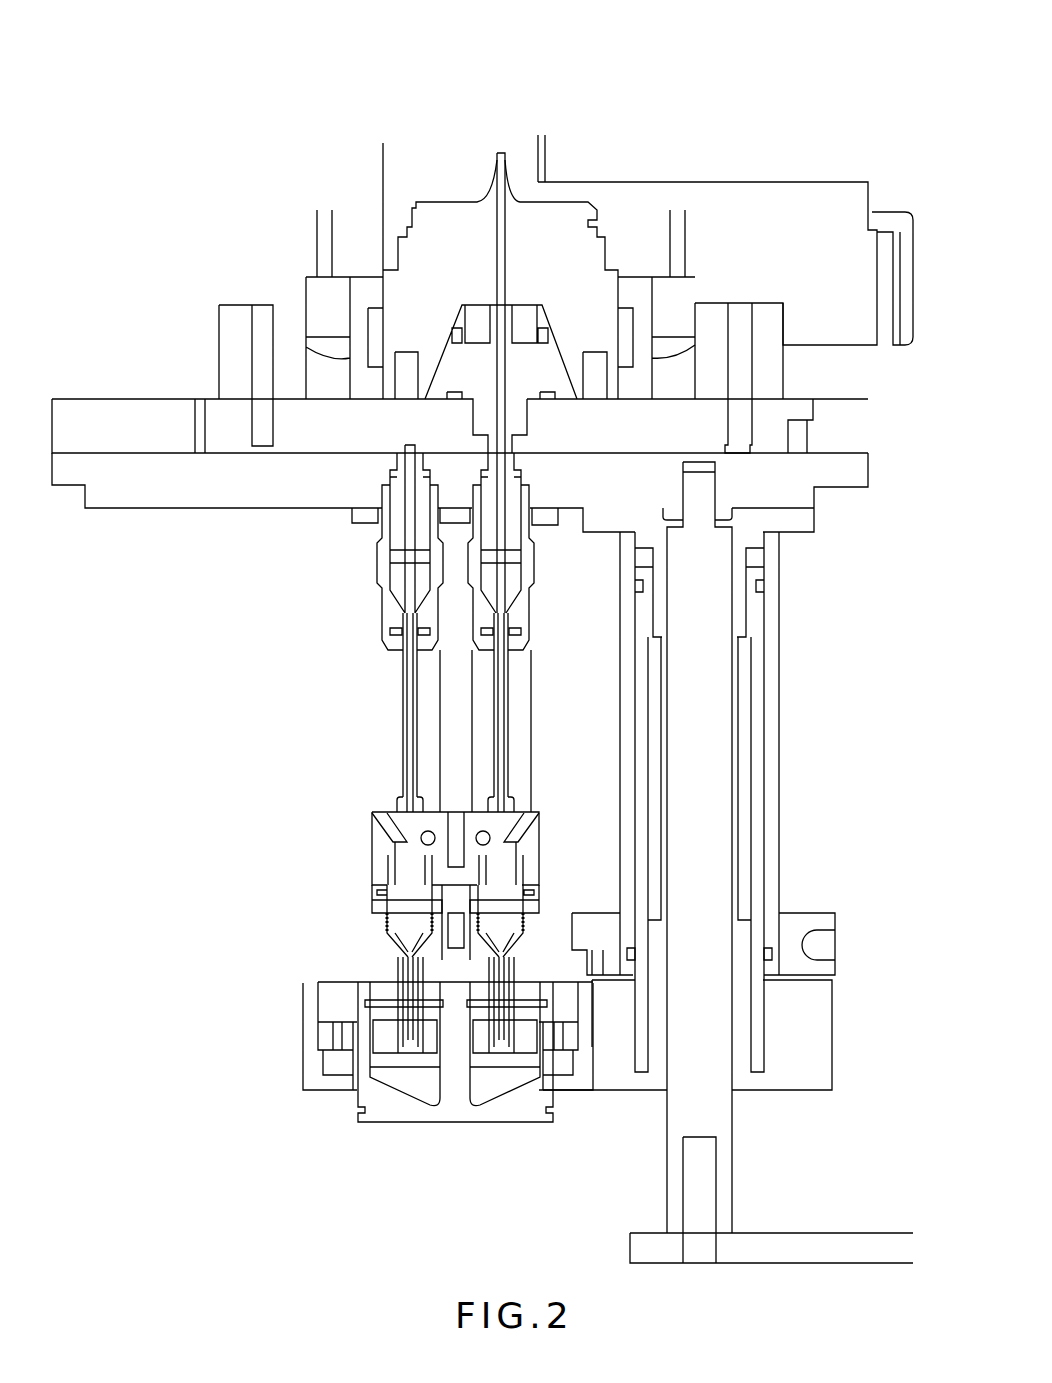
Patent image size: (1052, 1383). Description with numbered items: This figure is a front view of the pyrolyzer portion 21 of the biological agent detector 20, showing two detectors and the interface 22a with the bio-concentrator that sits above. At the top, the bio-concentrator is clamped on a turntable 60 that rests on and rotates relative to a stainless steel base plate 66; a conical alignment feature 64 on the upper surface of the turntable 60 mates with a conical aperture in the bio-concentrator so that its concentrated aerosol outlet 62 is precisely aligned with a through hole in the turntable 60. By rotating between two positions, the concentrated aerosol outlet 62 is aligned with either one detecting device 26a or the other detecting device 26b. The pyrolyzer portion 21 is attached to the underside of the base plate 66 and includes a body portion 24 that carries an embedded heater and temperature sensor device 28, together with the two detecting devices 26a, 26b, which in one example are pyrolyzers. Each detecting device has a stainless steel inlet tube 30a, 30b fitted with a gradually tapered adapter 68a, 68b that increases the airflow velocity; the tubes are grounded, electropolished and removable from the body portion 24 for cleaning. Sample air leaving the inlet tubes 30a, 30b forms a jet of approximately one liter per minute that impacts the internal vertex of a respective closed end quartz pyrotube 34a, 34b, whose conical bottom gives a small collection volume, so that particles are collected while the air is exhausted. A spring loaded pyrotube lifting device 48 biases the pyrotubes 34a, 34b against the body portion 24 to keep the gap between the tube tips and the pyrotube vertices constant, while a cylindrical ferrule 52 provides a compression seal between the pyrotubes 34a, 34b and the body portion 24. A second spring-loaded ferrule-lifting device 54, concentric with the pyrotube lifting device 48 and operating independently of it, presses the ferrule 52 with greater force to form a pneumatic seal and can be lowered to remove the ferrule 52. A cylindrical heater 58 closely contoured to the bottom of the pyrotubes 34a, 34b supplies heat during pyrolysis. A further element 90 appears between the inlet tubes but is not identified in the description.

The biological agent detector 20 is at (693, 115).
The pyrolyzer portion 21 is at (188, 157).
The interface with the bio-concentrator 22a is at (452, 247).
The body portion 24 is at (380, 843).
The first detecting device 26a is at (358, 600).
The second detecting device 26b is at (528, 687).
The embedded heater and temperature sensor device 28 is at (476, 836).
The first inlet tube 30a is at (402, 707).
The second inlet tube 30b is at (508, 722).
The first pyrotube 34a is at (397, 908).
The second pyrotube 34b is at (520, 880).
The pyrotube lifting device 48 is at (385, 1047).
The cylindrical ferrule 52 is at (388, 877).
The ferrule-lifting device 54 is at (455, 1095).
The cylindrical heater 58 is at (387, 937).
The turntable 60 is at (318, 422).
The concentrated aerosol outlet 62 is at (493, 195).
The conical alignment feature 64 is at (480, 353).
The base plate 66 is at (160, 473).
The first tapered adapter 68a is at (397, 502).
The second tapered adapter 68b is at (505, 497).
The spacer member 90 is at (452, 723).